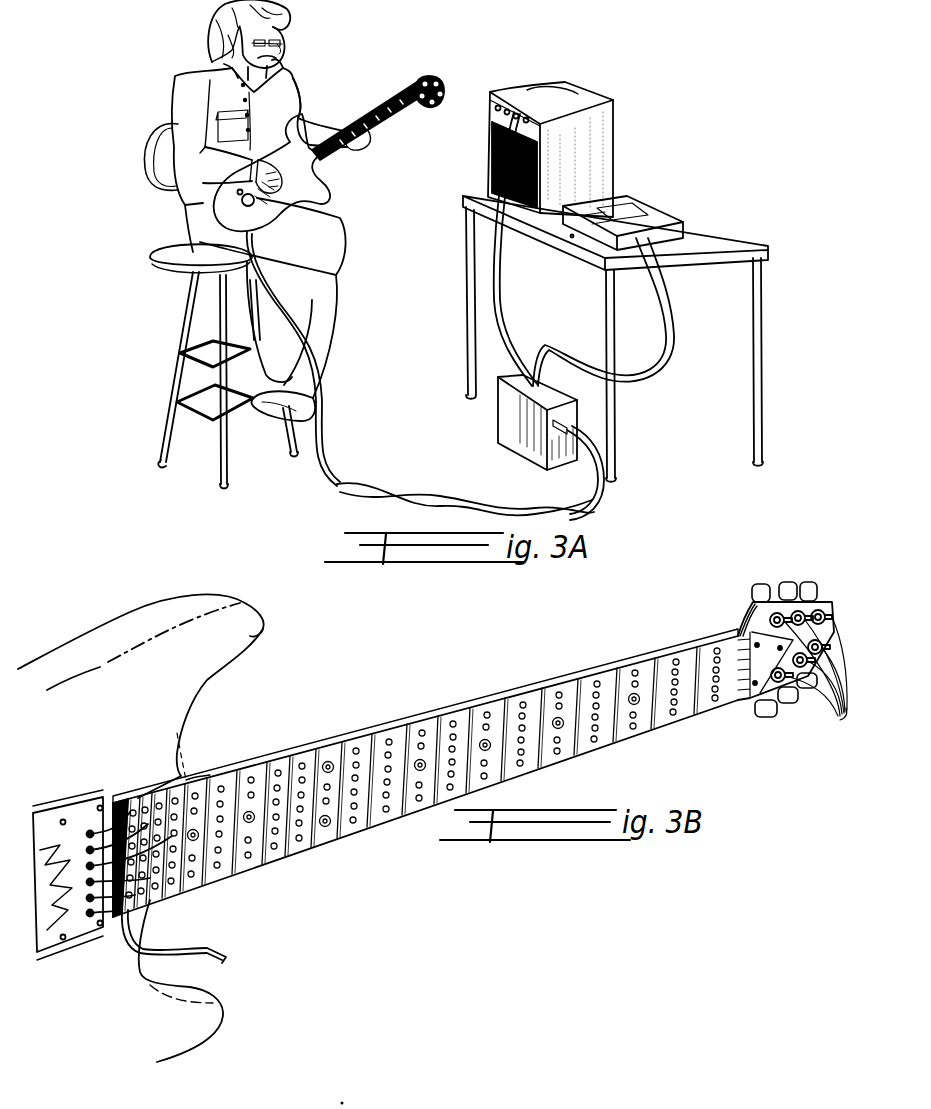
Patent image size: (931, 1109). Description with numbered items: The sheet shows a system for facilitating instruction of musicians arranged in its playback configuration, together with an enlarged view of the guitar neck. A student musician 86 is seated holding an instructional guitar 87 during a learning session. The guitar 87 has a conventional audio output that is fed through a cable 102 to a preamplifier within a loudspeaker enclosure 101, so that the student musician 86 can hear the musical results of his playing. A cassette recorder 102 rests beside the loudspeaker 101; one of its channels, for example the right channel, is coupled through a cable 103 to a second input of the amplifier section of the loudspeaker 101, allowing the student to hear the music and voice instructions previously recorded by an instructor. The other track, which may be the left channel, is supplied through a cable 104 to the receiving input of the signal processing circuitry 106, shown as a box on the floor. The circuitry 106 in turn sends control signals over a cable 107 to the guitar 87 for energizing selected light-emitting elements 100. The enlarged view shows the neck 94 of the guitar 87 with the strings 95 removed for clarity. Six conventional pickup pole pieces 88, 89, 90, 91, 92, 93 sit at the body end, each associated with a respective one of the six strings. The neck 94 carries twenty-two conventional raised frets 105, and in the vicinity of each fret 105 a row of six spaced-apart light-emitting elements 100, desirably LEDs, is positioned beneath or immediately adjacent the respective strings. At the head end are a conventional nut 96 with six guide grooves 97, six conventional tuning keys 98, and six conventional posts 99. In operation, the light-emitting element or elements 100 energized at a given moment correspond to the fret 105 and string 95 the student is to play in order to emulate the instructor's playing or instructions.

In FIG. 3A, the student musician 86 is at (181, 38).
In FIG. 3A, the instructional guitar 87 is at (320, 114).
In FIG. 3B, the instructional guitar 87 is at (148, 586).
In FIG. 3B, the pickup pole piece 88 is at (132, 805).
In FIG. 3B, the pickup pole piece 89 is at (150, 822).
In FIG. 3B, the pickup pole piece 90 is at (176, 832).
In FIG. 3B, the pickup pole piece 91 is at (152, 880).
In FIG. 3B, the pickup pole piece 92 is at (135, 896).
In FIG. 3B, the pickup pole piece 93 is at (122, 910).
In FIG. 3B, the neck 94 is at (393, 722).
In FIG. 3A, the strings 95 is at (392, 118).
In FIG. 3B, the nut 96 is at (746, 703).
In FIG. 3B, the guide grooves 97 is at (738, 645).
In FIG. 3B, the tuning keys 98 is at (808, 582).
In FIG. 3B, the posts 99 is at (808, 675).
In FIG. 3B, the light-emitting elements 100 is at (632, 664).
In FIG. 3A, the loudspeaker enclosure 101 is at (578, 88).
In FIG. 3A, the cassette recorder 102 is at (310, 382).
In FIG. 3A, the cable 103 is at (513, 330).
In FIG. 3A, the cable 104 is at (672, 330).
In FIG. 3B, the raised frets 105 is at (697, 720).
In FIG. 3A, the signal processing circuitry 106 is at (505, 418).
In FIG. 3A, the cable 107 is at (320, 340).